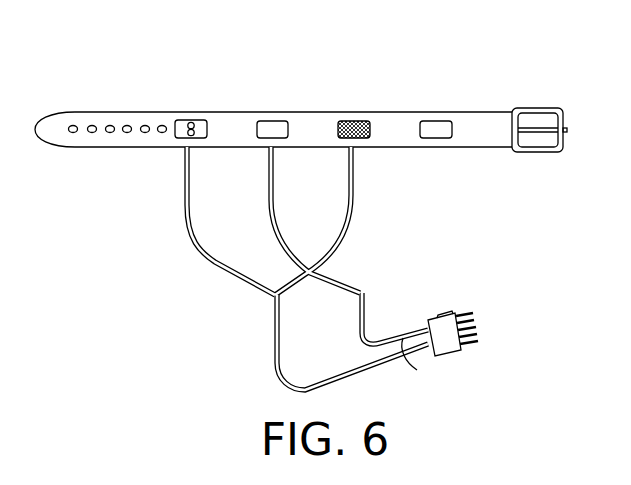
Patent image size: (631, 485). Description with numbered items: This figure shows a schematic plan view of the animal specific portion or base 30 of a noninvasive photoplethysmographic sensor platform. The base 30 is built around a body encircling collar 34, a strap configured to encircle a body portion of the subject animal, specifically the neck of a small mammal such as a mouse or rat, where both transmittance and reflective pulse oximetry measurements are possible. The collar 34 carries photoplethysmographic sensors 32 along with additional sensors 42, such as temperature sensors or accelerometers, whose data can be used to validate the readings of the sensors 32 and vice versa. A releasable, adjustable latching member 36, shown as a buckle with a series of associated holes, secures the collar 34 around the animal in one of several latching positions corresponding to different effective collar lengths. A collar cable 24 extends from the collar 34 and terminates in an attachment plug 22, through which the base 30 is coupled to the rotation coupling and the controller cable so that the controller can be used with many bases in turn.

The animal specific portion or base 30 is at (315, 77).
The body encircling collar 34 is at (227, 148).
The releasable latching member 36 is at (92, 124).
The sensors 32 is at (191, 120).
The additional sensors 42 is at (269, 121).
The collar cable 24 is at (278, 302).
The attachment plug 22 is at (442, 330).